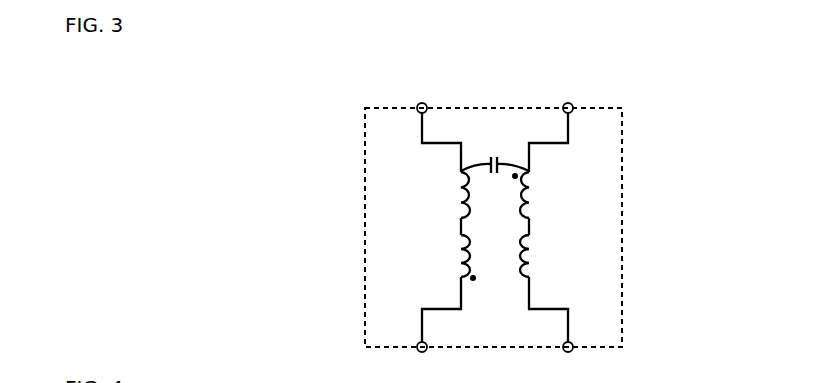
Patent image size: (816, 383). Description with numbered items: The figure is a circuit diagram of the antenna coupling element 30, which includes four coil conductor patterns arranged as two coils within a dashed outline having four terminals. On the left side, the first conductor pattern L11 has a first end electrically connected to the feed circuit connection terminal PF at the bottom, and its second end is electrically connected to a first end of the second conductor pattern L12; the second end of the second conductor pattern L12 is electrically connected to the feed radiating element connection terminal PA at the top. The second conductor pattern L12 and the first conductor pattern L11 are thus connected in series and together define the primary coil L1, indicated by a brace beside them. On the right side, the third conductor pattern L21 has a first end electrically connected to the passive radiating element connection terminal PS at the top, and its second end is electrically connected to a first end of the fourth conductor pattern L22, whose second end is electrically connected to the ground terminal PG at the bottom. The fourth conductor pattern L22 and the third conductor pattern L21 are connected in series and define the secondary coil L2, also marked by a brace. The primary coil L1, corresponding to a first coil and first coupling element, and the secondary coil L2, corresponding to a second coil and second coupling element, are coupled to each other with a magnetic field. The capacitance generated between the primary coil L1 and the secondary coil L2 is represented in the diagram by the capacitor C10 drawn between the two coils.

The antenna coupling element 30 is at (647, 62).
The feed radiating element connection terminal PA is at (422, 94).
The passive radiating element connection terminal PS is at (567, 94).
The feed circuit connection terminal PF is at (422, 362).
The ground terminal PG is at (568, 362).
The capacitor C10 is at (495, 152).
The primary coil L1 is at (409, 226).
The first conductor pattern L11 is at (441, 258).
The second conductor pattern L12 is at (438, 195).
The secondary coil L2 is at (578, 225).
The third conductor pattern L21 is at (544, 195).
The fourth conductor pattern L22 is at (548, 256).